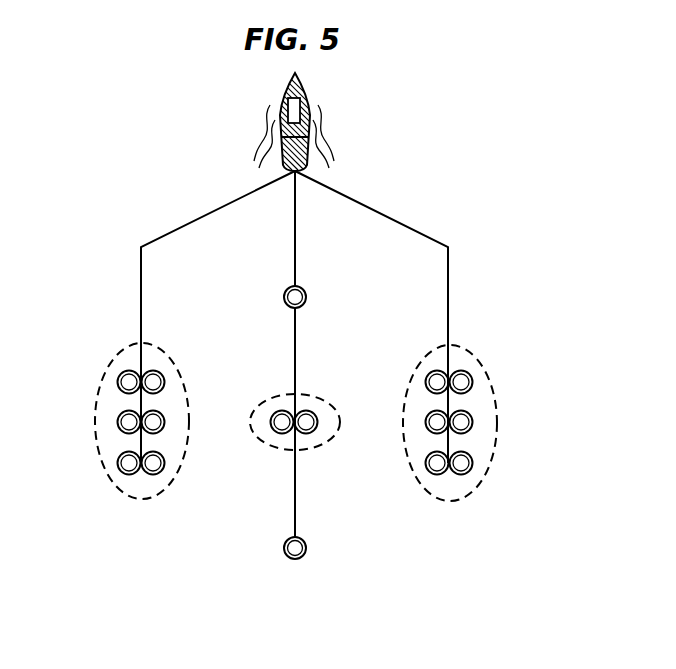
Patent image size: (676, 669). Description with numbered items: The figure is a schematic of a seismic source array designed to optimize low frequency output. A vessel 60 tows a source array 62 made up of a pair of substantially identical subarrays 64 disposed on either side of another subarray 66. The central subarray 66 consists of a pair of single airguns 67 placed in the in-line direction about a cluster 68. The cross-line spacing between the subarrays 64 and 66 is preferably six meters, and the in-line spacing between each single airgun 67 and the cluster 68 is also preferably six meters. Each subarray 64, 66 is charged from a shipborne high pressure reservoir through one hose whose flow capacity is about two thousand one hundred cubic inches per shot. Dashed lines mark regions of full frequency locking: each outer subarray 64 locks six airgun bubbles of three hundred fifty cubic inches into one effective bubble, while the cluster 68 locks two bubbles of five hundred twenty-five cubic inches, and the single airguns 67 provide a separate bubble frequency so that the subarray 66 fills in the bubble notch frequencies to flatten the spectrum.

The vessel 60 is at (292, 92).
The source array 62 is at (408, 186).
The subarrays 64 is at (111, 363).
The subarray 66 is at (278, 485).
The single airguns 67 is at (283, 293).
The cluster 68 is at (257, 406).